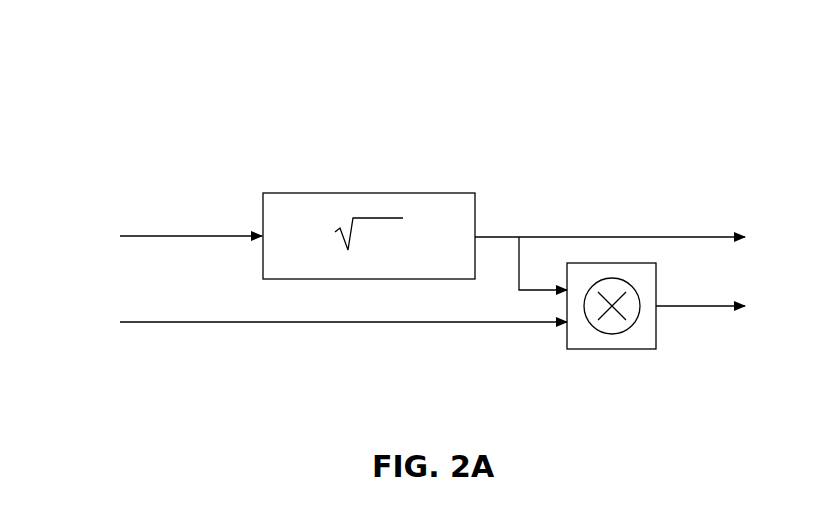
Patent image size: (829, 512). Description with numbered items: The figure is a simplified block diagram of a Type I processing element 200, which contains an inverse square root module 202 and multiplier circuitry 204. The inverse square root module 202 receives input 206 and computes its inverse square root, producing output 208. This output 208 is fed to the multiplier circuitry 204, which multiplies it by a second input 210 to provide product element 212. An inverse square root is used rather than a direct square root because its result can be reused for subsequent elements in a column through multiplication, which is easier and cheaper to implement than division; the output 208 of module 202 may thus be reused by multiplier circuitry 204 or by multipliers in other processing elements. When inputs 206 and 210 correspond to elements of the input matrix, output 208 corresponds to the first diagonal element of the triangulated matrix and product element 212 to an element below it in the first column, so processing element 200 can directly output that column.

The Type I processing element 200 is at (150, 82).
The inverse square root module 202 is at (370, 193).
The multiplier circuitry 204 is at (607, 349).
The input 206 is at (190, 236).
The inverse square root output 208 is at (610, 237).
The input 210 is at (347, 322).
The product element 212 is at (688, 306).